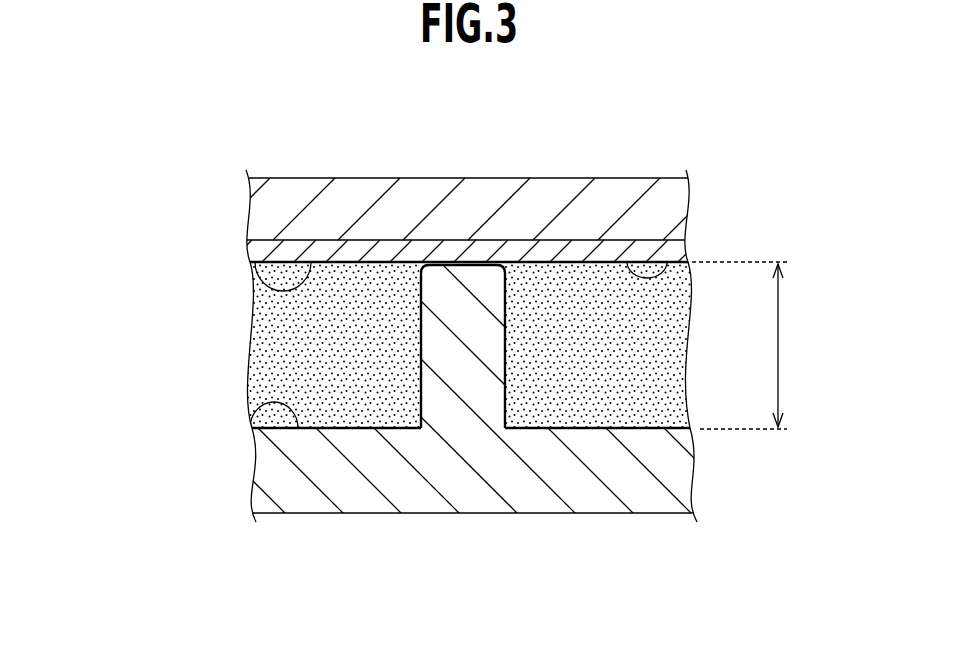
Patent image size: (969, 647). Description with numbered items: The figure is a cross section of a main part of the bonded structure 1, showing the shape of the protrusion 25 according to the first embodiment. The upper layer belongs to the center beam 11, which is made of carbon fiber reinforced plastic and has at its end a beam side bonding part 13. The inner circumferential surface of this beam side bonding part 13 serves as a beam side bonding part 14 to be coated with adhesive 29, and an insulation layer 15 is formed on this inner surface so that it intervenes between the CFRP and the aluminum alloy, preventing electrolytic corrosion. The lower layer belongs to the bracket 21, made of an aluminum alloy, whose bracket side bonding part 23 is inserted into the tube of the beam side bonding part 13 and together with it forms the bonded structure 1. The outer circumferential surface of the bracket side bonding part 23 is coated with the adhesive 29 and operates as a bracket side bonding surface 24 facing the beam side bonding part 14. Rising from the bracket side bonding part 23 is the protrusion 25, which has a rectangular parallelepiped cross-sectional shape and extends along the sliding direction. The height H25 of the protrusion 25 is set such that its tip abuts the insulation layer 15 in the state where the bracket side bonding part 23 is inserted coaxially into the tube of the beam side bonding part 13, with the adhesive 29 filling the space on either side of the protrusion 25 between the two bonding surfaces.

The bonded structure 1 is at (321, 164).
The center beam 11 is at (617, 175).
The beam side bonding part 13 is at (381, 188).
The insulation layer 15 is at (683, 243).
The beam side bonding part 14 is at (292, 291).
The bracket 21 is at (619, 517).
The bracket side bonding part 23 is at (430, 506).
The bracket side bonding surface 24 is at (252, 405).
The protrusion 25 is at (507, 297).
The adhesive 29 is at (268, 352).
The height of the protrusion H25 is at (781, 352).